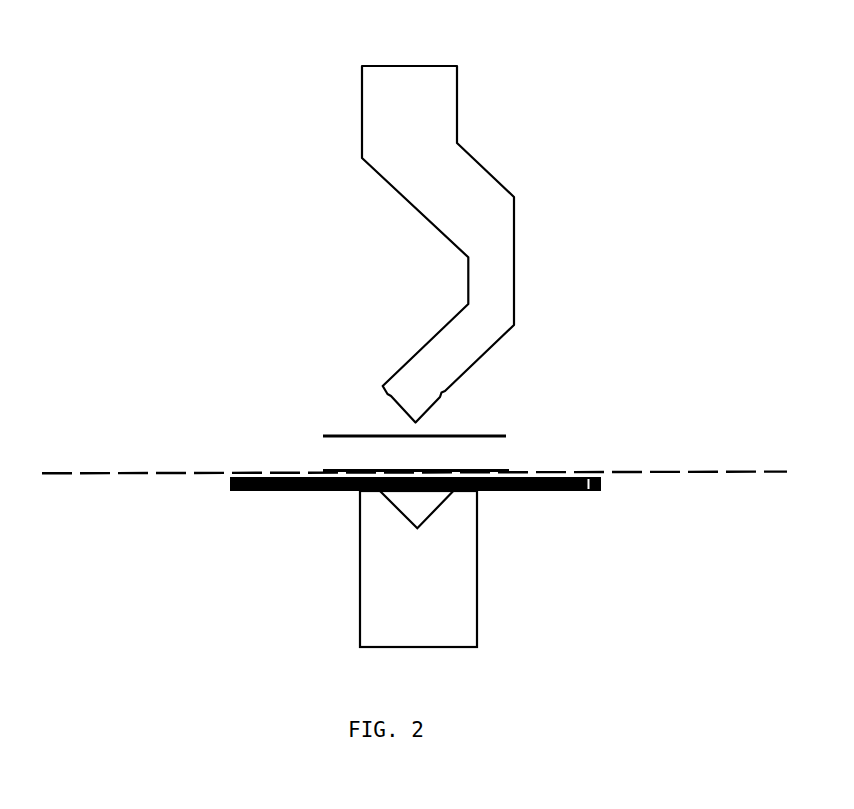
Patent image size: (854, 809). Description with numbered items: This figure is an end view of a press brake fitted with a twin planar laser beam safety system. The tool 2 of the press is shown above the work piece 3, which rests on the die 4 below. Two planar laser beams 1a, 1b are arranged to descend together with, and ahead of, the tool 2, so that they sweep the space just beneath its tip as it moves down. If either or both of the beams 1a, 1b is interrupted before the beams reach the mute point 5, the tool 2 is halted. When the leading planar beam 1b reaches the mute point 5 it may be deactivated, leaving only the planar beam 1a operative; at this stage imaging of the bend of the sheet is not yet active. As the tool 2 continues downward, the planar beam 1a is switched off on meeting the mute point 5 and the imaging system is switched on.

The tool 2 is at (528, 198).
The planar laser beam 1a is at (531, 413).
The planar laser beam 1b is at (531, 448).
The work piece 3 is at (617, 488).
The die 4 is at (490, 568).
The mute point 5 is at (414, 428).